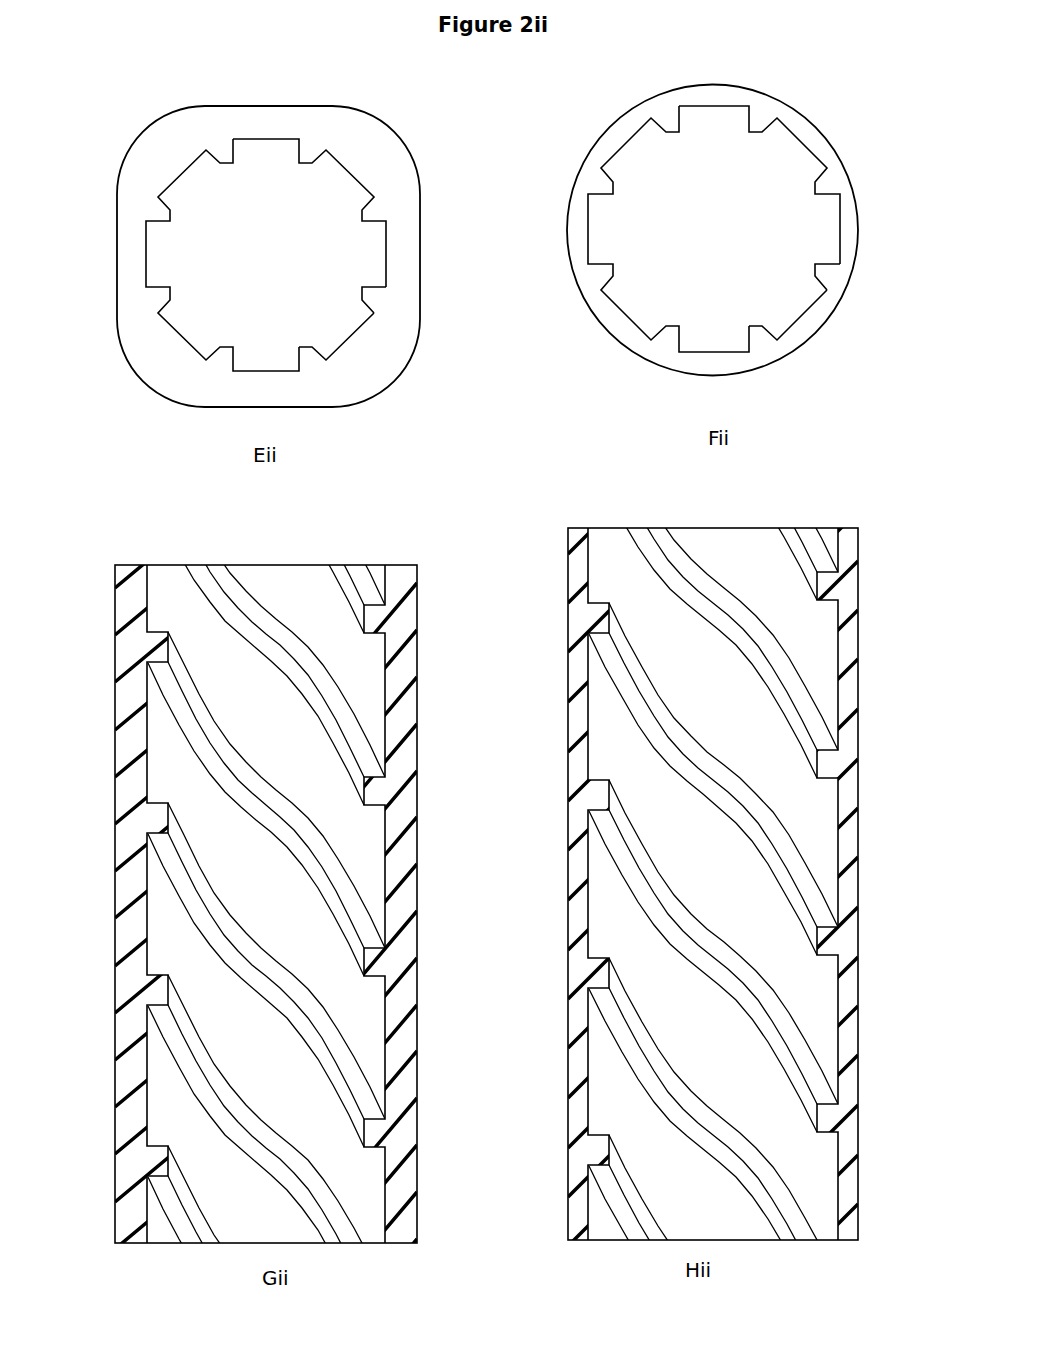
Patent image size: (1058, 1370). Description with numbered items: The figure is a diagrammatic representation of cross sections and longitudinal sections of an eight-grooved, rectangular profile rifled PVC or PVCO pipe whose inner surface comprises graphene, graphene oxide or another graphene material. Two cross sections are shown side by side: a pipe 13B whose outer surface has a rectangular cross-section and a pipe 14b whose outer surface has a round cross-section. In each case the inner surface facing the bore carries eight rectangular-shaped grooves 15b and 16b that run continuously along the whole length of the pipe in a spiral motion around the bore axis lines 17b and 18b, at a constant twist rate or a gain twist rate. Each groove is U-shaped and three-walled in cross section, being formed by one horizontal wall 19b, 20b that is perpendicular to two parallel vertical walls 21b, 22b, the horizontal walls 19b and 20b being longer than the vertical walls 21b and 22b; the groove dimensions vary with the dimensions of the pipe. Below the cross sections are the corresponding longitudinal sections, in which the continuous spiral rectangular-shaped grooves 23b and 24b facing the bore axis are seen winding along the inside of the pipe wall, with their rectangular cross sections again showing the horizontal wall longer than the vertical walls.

The square tubular body 13B is at (131, 138).
The circular tubular body 14b is at (628, 118).
The rectangular-shaped grooves 15b is at (165, 255).
The rectangular-shaped grooves 16b is at (610, 202).
The bore axis line 17b is at (322, 283).
The bore axis line 18b is at (766, 265).
The horizontal wall 19b is at (352, 333).
The horizontal wall 20b is at (802, 315).
The vertical walls 21b is at (327, 362).
The vertical walls 22b is at (777, 340).
The continuous spiral rectangular shaped grooves 23b is at (390, 713).
The continuous spiral rectangular shaped grooves 24b is at (822, 672).